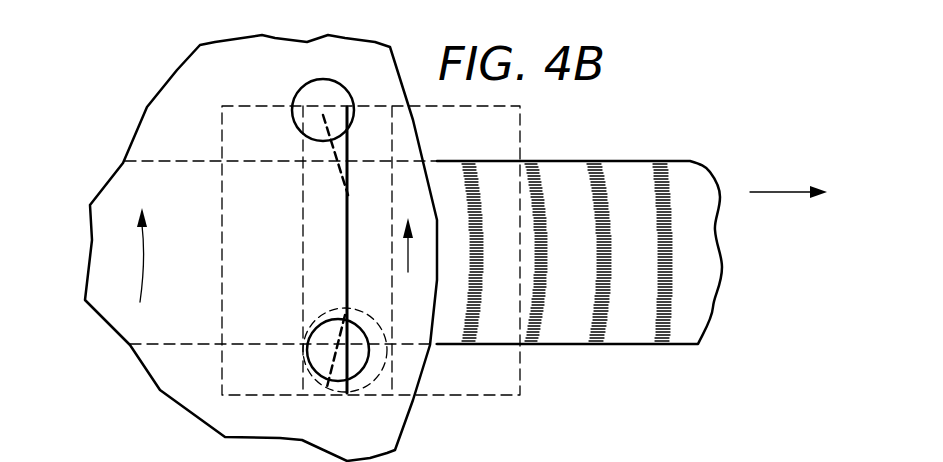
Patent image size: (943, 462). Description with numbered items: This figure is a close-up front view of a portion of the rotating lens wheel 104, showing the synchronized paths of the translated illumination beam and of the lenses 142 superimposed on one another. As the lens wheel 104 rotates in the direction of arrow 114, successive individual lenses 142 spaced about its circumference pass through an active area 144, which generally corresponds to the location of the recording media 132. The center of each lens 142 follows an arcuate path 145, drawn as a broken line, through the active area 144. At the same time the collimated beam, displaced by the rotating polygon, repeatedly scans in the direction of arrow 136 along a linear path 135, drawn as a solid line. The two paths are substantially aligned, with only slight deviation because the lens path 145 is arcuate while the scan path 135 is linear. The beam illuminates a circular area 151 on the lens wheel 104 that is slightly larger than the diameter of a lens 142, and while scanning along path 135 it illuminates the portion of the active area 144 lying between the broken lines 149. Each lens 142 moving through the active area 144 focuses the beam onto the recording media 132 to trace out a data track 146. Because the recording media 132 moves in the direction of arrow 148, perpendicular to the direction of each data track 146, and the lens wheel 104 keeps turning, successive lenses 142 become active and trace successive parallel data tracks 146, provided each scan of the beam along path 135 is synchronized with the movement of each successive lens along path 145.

The lens wheel 104 is at (410, 420).
The arrow indicating rotation of the lens wheel 114 is at (147, 257).
The recording media 132 is at (638, 160).
The linear path 135 is at (335, 393).
The arrow indicating beam scan direction 136 is at (412, 250).
The lens 142 is at (337, 92).
The active area 144 is at (520, 137).
The arcuate path 145 is at (342, 172).
The data track 146 is at (606, 330).
The arrow indicating movement of the recording media 148 is at (783, 190).
The broken lines 149 is at (392, 142).
The circular area 151 is at (377, 385).